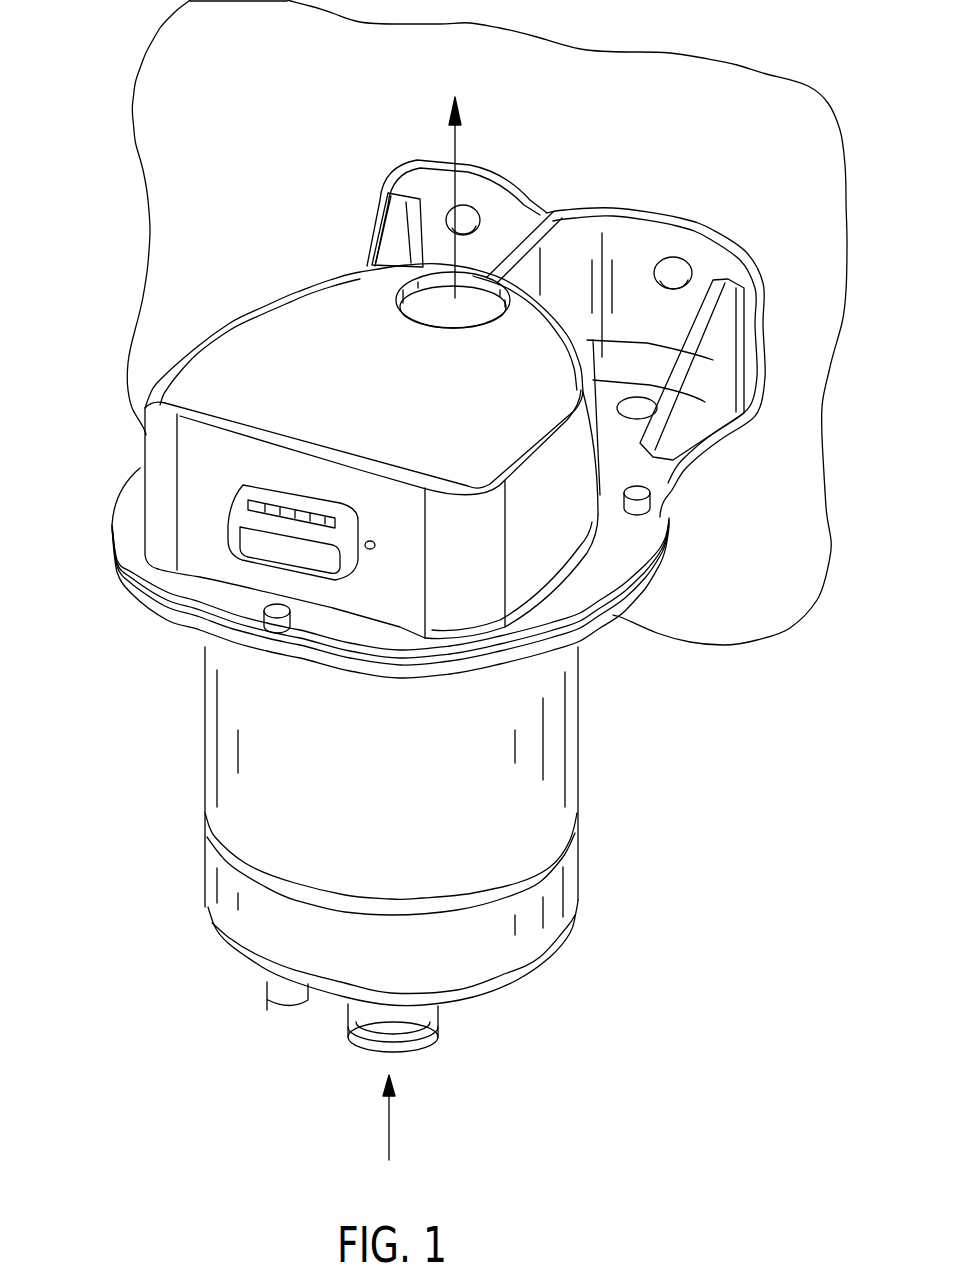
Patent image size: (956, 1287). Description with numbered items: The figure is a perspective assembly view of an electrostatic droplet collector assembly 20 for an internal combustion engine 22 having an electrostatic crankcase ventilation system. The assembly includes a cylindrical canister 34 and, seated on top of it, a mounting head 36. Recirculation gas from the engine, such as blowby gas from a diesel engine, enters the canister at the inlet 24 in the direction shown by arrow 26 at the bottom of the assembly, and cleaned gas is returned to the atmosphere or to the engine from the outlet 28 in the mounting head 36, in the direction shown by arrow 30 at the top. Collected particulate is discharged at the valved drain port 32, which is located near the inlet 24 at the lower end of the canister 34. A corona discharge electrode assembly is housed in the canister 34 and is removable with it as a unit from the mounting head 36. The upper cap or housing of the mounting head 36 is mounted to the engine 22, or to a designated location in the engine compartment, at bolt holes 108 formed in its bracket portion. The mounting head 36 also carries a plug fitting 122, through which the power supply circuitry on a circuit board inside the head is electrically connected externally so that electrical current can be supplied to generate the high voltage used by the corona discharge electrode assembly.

The electrostatic droplet collector assembly 20 is at (156, 723).
The internal combustion engine 22 is at (158, 166).
The inlet 24 is at (438, 1034).
The arrow 26 is at (390, 1128).
The outlet 28 is at (433, 318).
The arrow 30 is at (452, 148).
The valved drain port 32 is at (268, 998).
The cylindrical canister 34 is at (205, 787).
The mounting head 36 is at (371, 451).
The bolt holes 108 is at (683, 268).
The plug fitting 122 is at (283, 502).